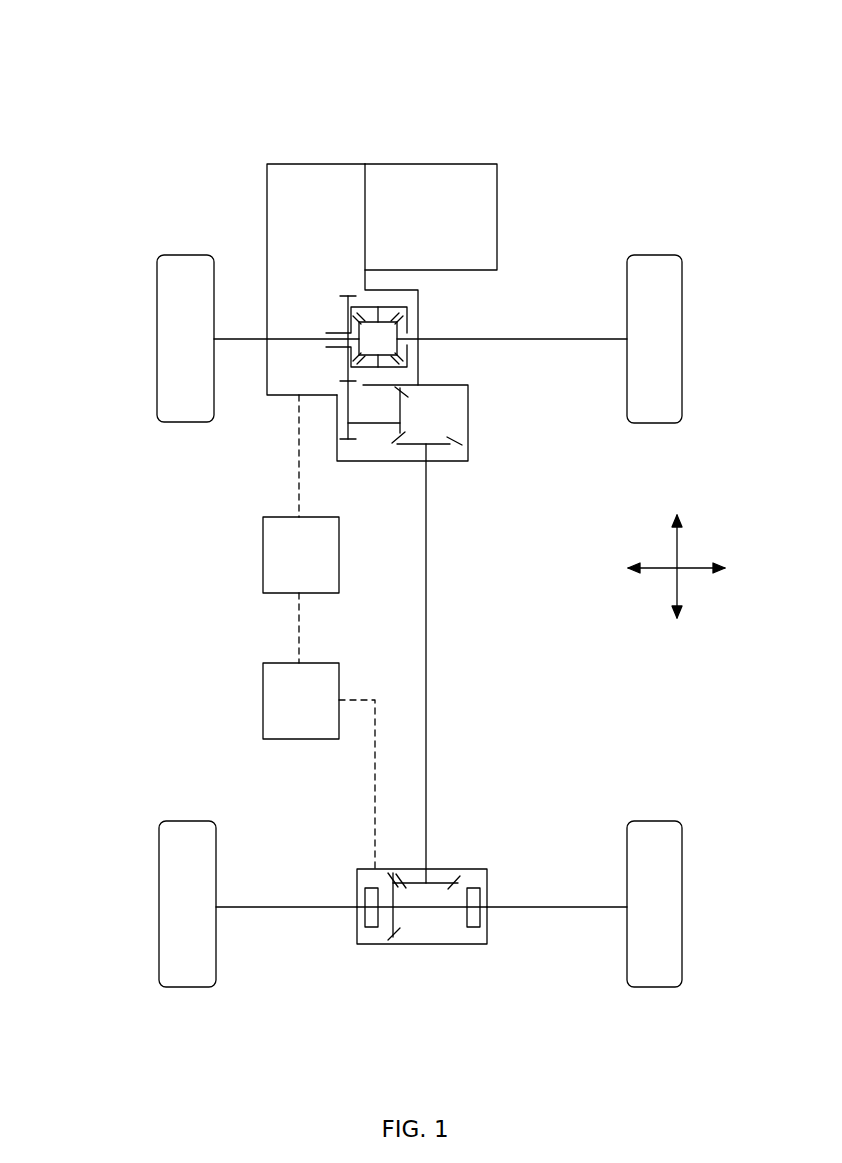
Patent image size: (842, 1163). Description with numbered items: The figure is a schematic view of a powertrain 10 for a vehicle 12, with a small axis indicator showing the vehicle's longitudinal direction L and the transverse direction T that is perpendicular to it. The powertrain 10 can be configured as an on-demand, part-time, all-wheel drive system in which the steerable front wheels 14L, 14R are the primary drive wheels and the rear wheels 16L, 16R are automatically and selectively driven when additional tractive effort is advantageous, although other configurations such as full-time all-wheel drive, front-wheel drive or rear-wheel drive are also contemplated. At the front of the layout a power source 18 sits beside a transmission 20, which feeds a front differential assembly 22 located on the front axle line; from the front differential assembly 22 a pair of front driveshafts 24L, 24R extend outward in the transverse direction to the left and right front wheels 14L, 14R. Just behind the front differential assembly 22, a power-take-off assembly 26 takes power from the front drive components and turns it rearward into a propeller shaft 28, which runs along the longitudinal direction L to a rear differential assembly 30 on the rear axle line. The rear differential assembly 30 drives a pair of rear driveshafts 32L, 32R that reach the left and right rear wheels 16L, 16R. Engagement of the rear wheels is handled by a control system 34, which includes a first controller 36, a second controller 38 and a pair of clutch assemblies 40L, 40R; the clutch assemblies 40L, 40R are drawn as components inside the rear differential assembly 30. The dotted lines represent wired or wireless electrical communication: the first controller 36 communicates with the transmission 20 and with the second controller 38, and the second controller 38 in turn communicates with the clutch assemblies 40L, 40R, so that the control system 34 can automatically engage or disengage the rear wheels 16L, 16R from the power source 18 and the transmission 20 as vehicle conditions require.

The powertrain 10 is at (497, 61).
The vehicle 12 is at (104, 64).
The front wheel 14L is at (180, 255).
The front wheel 14R is at (650, 255).
The rear wheel 16L is at (185, 987).
The rear wheel 16R is at (652, 987).
The power source 18 is at (432, 164).
The transmission 20 is at (306, 164).
The front differential assembly 22 is at (407, 311).
The front driveshaft 24L is at (237, 342).
The front driveshaft 24R is at (528, 338).
The power-take-off assembly 26 is at (470, 415).
The propeller shaft 28 is at (426, 740).
The rear differential assembly 30 is at (423, 946).
The rear driveshaft 32L is at (277, 907).
The rear driveshaft 32R is at (572, 907).
The control system 34 is at (163, 467).
The first controller 36 is at (287, 568).
The second controller 38 is at (287, 714).
The clutch assembly 40L is at (374, 928).
The clutch assembly 40R is at (473, 928).
The transverse direction T is at (650, 570).
The longitudinal direction L is at (678, 590).